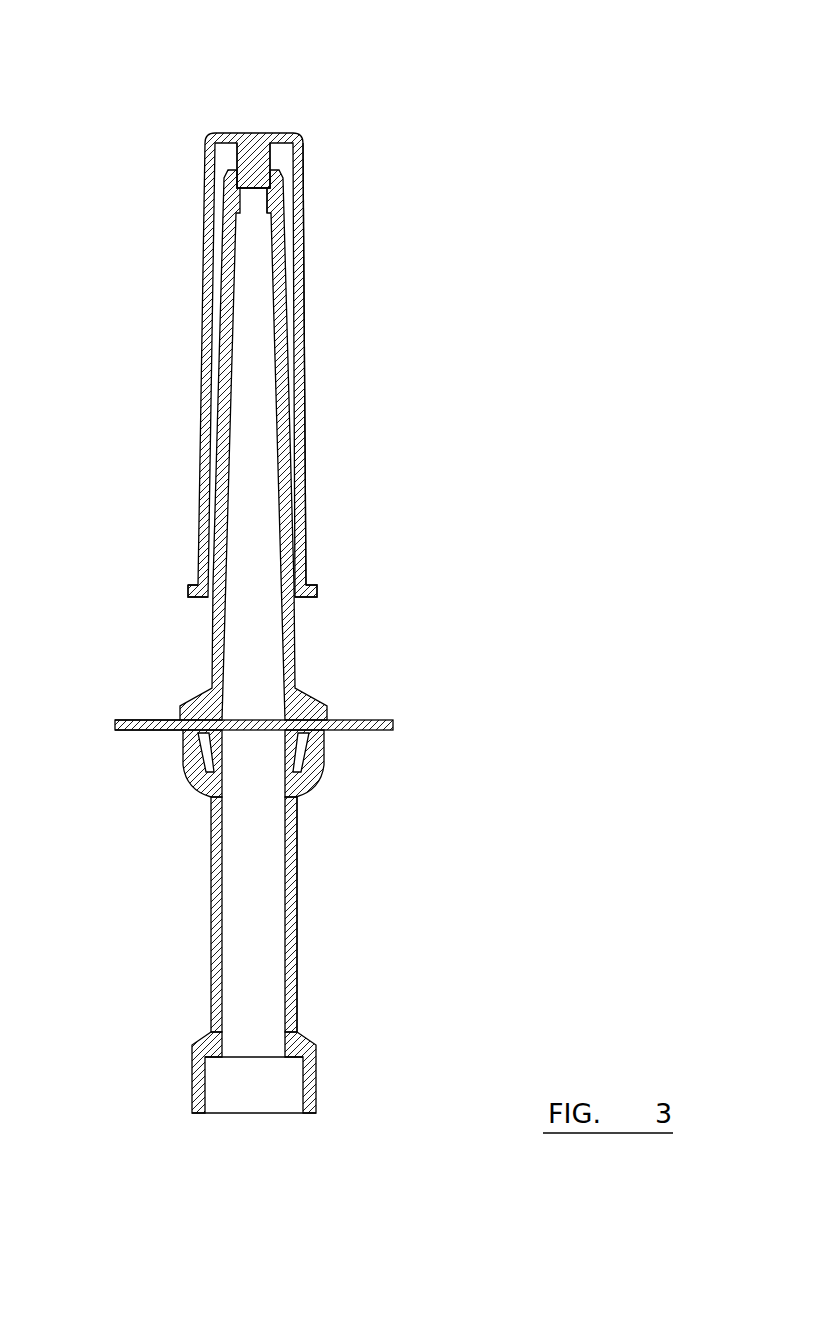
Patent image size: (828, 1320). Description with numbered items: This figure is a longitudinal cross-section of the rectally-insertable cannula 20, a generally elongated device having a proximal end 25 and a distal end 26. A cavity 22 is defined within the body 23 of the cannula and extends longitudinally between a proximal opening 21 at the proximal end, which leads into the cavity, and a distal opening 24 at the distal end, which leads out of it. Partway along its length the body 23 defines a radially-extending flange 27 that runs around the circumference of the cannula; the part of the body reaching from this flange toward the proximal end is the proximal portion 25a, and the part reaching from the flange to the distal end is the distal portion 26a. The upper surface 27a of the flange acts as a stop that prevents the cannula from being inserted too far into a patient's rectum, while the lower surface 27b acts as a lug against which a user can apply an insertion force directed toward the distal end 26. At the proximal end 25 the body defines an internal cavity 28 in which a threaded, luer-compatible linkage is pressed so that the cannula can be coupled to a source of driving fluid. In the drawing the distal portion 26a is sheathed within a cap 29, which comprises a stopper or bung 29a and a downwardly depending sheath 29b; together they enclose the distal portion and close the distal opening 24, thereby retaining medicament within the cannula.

The cannula 20 is at (438, 438).
The proximal opening 21 is at (260, 1098).
The cavity 22 is at (266, 897).
The body 23 is at (293, 627).
The distal opening 24 is at (257, 198).
The proximal end 25 is at (298, 1032).
The proximal portion 25a is at (298, 908).
The distal end 26 is at (283, 207).
The distal portion 26a is at (305, 353).
The radially-extending flange 27 is at (395, 725).
The upper surface 27a is at (133, 720).
The lower surface 27b is at (143, 732).
The internal cavity 28 is at (312, 1085).
The cap 29 is at (202, 388).
The stopper 29a is at (253, 140).
The sheath 29b is at (310, 588).